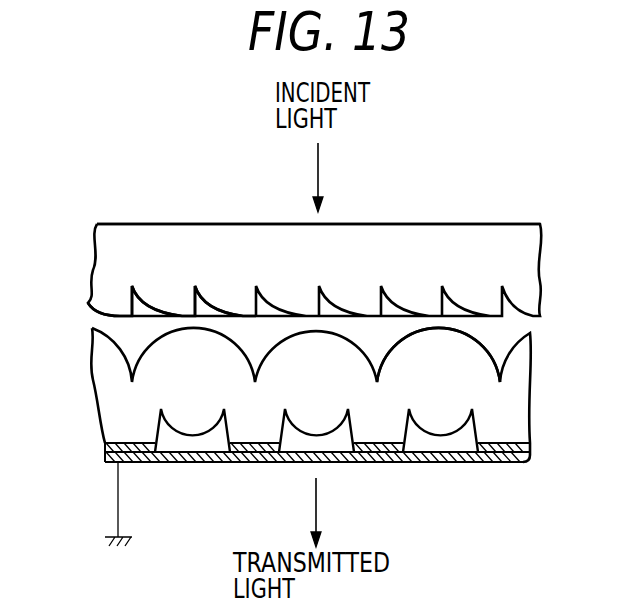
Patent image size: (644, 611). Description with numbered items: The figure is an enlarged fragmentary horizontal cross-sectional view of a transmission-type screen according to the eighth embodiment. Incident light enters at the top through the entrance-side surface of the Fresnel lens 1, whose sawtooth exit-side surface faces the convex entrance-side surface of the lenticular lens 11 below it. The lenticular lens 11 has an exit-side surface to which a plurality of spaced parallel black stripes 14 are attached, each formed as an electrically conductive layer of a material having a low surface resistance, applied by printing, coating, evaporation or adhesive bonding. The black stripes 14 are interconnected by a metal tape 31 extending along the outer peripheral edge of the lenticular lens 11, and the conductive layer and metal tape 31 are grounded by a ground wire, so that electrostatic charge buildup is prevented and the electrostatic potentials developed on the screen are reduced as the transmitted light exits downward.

The Fresnel lens 1 is at (431, 213).
The lenticular lens 11 is at (354, 433).
The black stripes 14 is at (250, 462).
The metal tape 31 is at (191, 462).